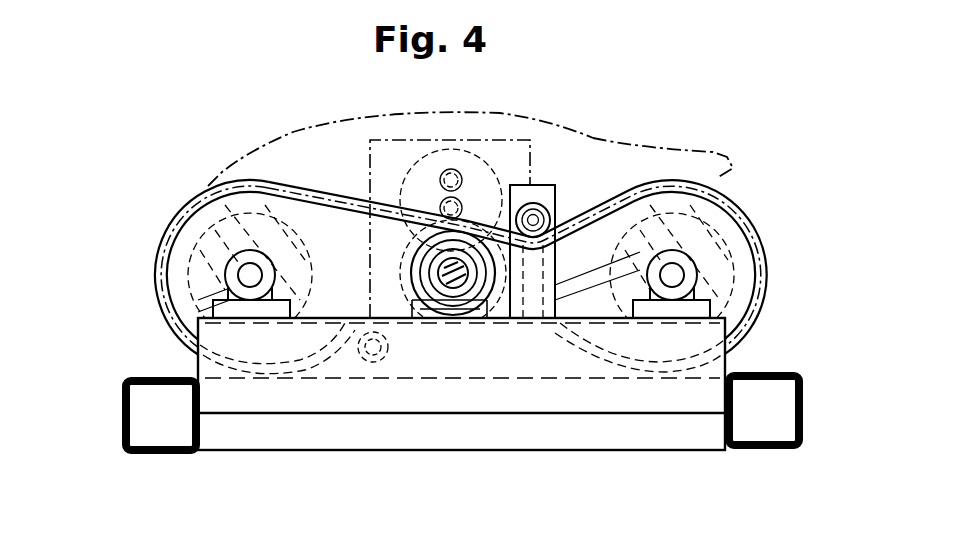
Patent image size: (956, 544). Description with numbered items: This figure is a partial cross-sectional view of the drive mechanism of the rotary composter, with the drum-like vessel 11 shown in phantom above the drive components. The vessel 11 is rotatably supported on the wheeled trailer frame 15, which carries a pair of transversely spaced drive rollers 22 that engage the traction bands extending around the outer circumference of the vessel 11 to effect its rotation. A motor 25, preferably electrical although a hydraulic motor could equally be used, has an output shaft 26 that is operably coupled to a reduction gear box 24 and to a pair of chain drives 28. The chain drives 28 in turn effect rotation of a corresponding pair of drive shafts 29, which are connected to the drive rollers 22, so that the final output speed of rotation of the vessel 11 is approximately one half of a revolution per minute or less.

The vessel 11 is at (750, 163).
The wheeled trailer frame 15 is at (770, 450).
The drive rollers 22 is at (187, 220).
The reduction gear box 24 is at (551, 148).
The motor 25 is at (362, 124).
The output shaft 26 is at (442, 322).
The chain drives 28 is at (170, 330).
The drive shafts 29 is at (247, 275).